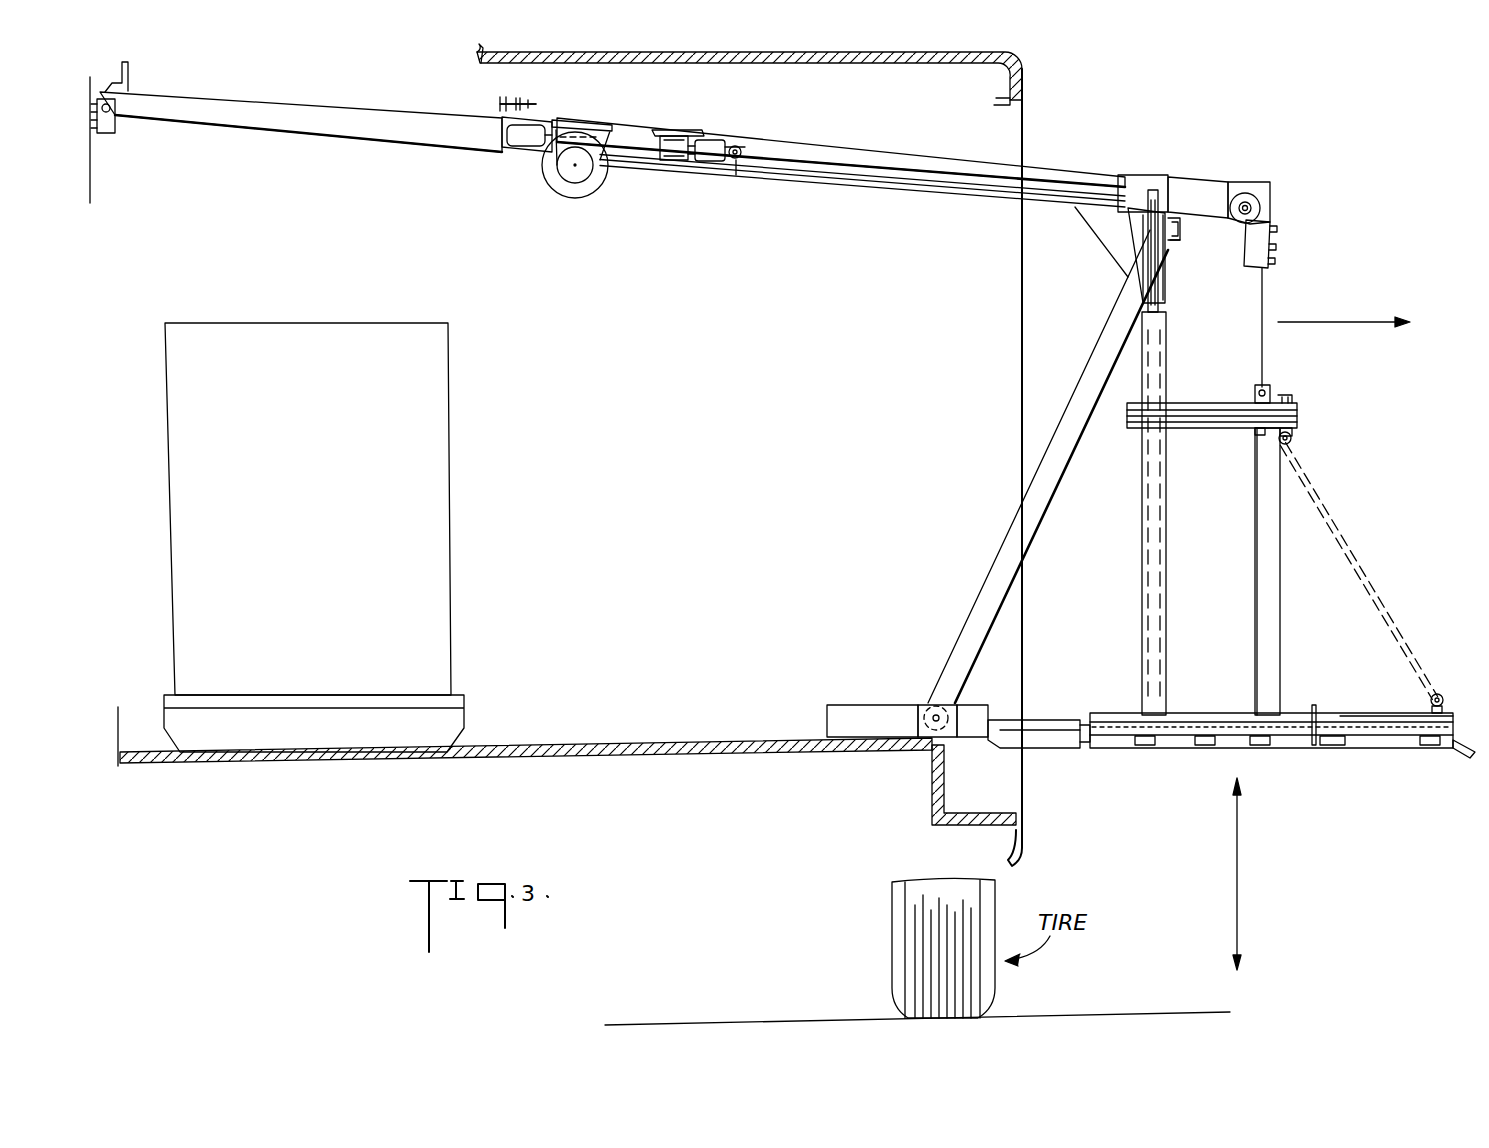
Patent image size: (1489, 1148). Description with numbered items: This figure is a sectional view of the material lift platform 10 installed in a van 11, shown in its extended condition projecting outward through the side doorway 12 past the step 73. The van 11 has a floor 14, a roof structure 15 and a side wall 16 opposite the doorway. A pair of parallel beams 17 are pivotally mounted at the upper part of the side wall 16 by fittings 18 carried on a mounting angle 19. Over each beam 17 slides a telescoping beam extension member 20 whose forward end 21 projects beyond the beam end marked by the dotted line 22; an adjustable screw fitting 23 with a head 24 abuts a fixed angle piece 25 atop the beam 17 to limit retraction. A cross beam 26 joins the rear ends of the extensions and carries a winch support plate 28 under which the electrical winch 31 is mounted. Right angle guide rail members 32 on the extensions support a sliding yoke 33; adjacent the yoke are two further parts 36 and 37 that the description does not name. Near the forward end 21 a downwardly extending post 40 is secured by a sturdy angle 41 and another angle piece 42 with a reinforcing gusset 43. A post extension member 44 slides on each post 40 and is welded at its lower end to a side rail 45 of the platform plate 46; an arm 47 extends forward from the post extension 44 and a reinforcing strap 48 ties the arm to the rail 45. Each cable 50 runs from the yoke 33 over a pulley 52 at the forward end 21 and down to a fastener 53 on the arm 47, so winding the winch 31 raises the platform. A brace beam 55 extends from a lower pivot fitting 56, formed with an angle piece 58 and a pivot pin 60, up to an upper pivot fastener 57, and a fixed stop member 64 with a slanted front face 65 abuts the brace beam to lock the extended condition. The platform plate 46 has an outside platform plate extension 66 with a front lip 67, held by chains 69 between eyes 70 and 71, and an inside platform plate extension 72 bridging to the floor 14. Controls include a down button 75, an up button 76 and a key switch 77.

The material lift platform 10 is at (1184, 144).
The van 11 is at (1030, 78).
The side doorway 12 is at (1038, 158).
The floor 14 is at (745, 740).
The roof structure 15 is at (880, 63).
The side wall 16 is at (92, 195).
The beam 17 is at (393, 143).
The fitting 18 is at (115, 127).
The angle 19 is at (104, 133).
The beam extension member 20 is at (846, 148).
The forward end 21 is at (1247, 186).
The end of beam 22 is at (740, 143).
The adjustable screw fitting 23 is at (535, 105).
The head 24 is at (499, 103).
The fixed angle piece 25 is at (132, 72).
The cross beam 26 is at (548, 128).
The winch support plate 28 is at (600, 122).
The electrical winch 31 is at (586, 186).
The guide rail member 32 is at (780, 166).
The sliding yoke 33 is at (714, 163).
The guide 36 is at (656, 132).
The slide block 37 is at (668, 162).
The post 40 is at (1160, 302).
The angle 41 is at (1205, 178).
The angle piece 42 is at (1140, 182).
The reinforcing gusset 43 is at (1168, 212).
The post extension member 44 is at (1142, 515).
The side rail 45 is at (1210, 720).
The platform plate 46 is at (1198, 756).
The arm 47 is at (1211, 408).
The reinforcing strap 48 is at (1268, 600).
The cable 50 is at (1262, 343).
The pulley 52 is at (1261, 208).
The fastener 53 is at (1270, 388).
The brace beam 55 is at (1046, 533).
The lower pivot fitting 56 is at (920, 698).
The upper pivot fastener 57 is at (1180, 242).
The angle piece 58 is at (867, 715).
The pivot pin 60 is at (950, 716).
The fixed stop member 64 is at (1110, 252).
The slanted front face 65 is at (1130, 276).
The outside platform plate extension 66 is at (1363, 712).
The front lip 67 is at (1466, 755).
The chain 69 is at (1370, 582).
The eye 70 is at (1293, 438).
The eye 71 is at (1440, 694).
The inside platform plate extension 72 is at (1064, 720).
The step 73 is at (926, 800).
The down button 75 is at (1277, 248).
The up button 76 is at (1278, 229).
The key switch 77 is at (1270, 262).